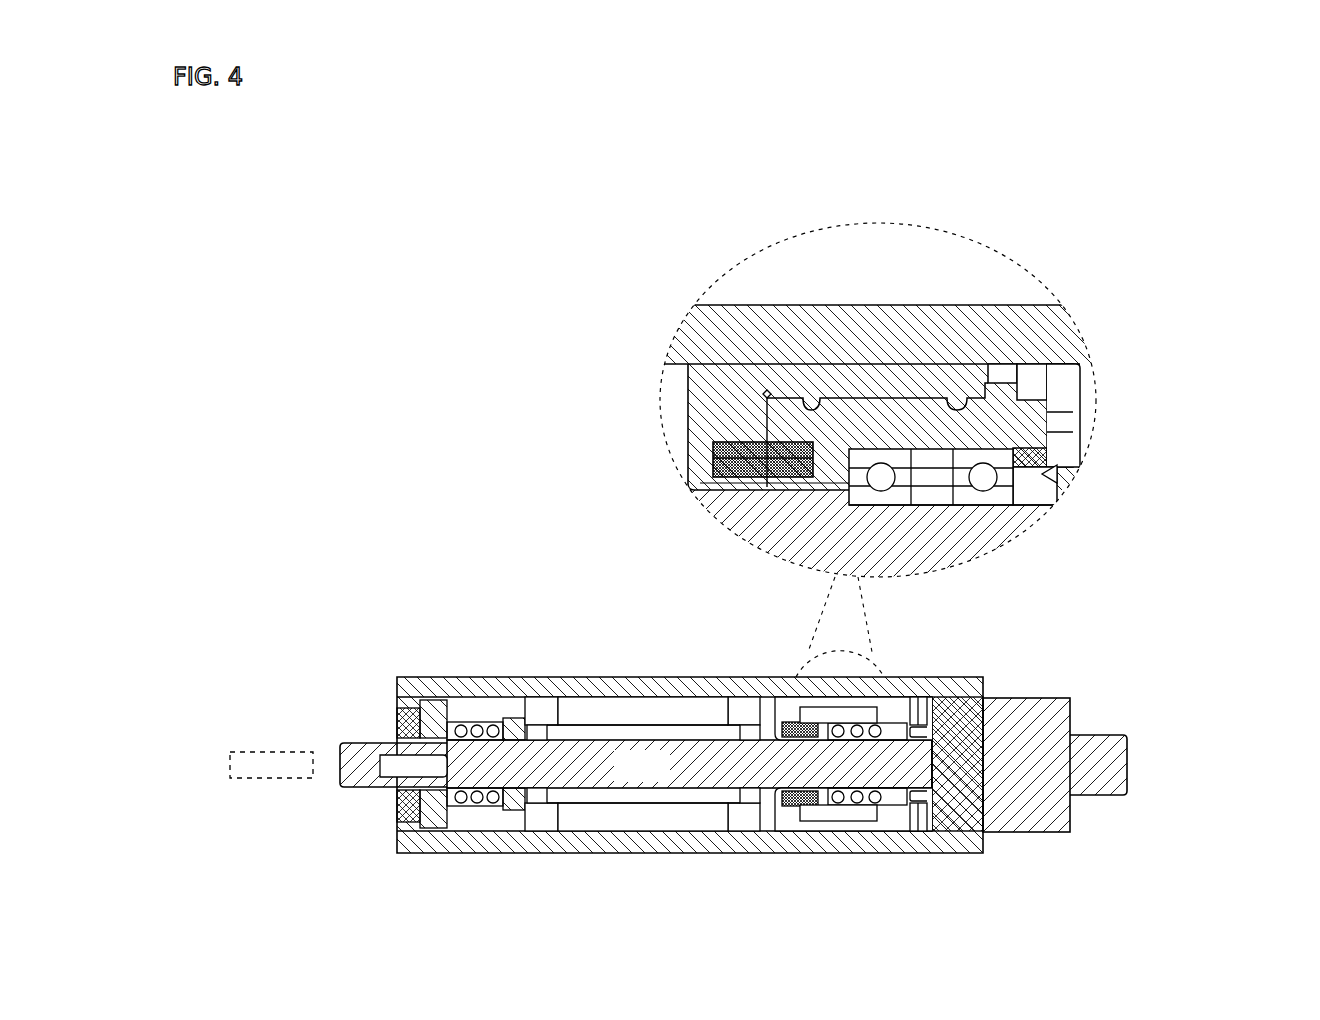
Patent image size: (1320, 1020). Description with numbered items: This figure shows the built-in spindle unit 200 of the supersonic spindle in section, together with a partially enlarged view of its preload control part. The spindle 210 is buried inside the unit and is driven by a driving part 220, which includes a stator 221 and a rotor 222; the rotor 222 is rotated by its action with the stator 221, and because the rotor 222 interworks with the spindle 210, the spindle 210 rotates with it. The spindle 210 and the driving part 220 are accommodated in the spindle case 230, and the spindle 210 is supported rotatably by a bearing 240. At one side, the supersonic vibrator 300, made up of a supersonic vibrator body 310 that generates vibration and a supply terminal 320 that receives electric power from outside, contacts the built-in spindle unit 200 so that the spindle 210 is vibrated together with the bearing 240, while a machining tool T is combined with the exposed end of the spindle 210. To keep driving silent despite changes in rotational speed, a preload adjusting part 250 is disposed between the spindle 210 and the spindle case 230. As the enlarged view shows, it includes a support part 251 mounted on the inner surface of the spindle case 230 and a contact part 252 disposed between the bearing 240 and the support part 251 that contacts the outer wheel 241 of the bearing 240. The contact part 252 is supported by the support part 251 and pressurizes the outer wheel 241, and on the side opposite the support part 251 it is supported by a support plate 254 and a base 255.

The built-in spindle unit 200 is at (238, 356).
The spindle 210 is at (636, 764).
The driving part 220 is at (642, 692).
The stator 221 is at (580, 700).
The rotor 222 is at (640, 708).
The spindle case 230 is at (798, 526).
The bearing 240 is at (875, 481).
The outer wheel 241 is at (878, 452).
The preload adjusting part 250 is at (818, 486).
The support part 251 is at (820, 380).
The contact part 252 is at (1060, 436).
The support plate 254 is at (1075, 378).
The base 255 is at (918, 700).
The supersonic vibrator 300 is at (1122, 723).
The supersonic vibrator body 310 is at (1003, 693).
The supply terminal 320 is at (1103, 729).
The machining tool T is at (265, 728).